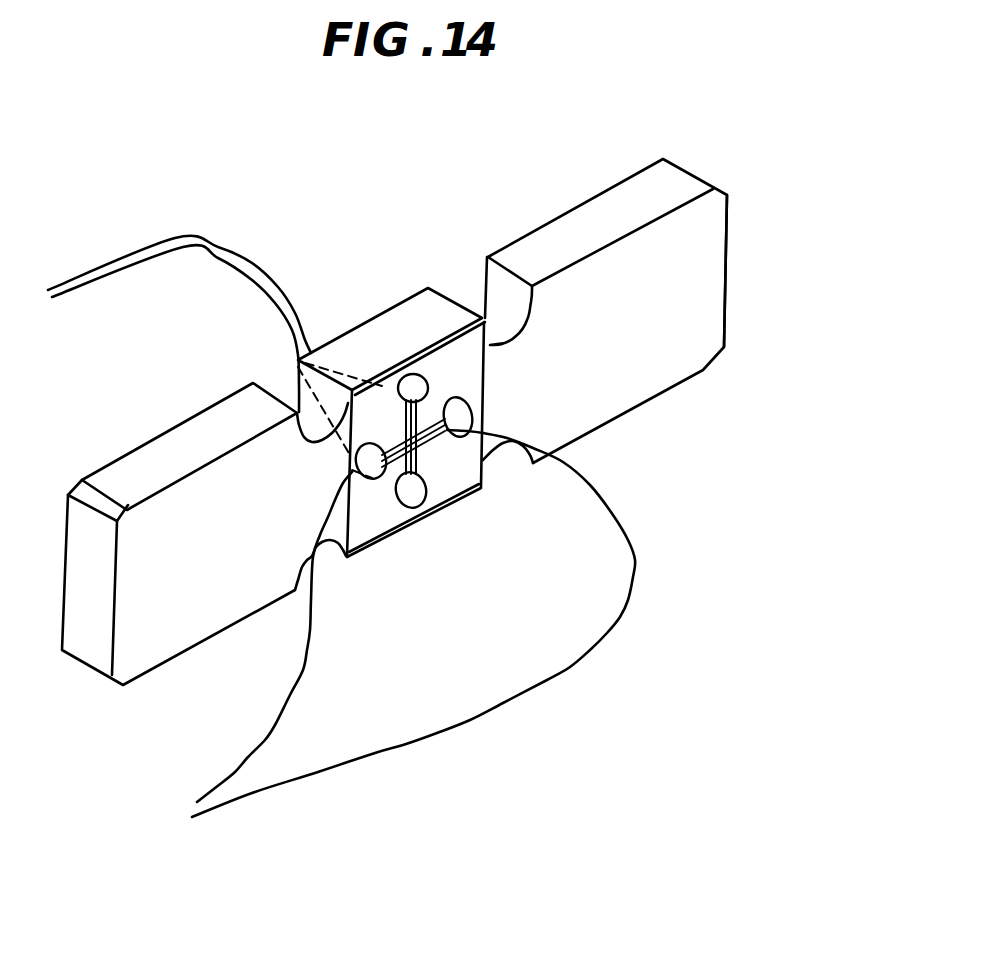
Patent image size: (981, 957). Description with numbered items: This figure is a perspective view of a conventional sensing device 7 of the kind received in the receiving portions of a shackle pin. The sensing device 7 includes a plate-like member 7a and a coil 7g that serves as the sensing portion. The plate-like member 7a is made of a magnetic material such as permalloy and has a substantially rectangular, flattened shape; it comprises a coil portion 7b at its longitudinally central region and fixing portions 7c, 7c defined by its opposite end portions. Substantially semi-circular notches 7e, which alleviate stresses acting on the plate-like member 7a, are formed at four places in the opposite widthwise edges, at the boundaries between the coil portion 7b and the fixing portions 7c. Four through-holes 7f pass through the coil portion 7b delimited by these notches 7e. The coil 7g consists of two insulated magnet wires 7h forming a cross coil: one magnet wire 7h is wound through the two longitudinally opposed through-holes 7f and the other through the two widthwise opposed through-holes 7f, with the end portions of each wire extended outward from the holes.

The sensing device 7 is at (740, 304).
The plate-like member 7a is at (728, 228).
The coil portion 7b is at (358, 343).
The fixing portions 7c is at (596, 213).
The notches 7e is at (503, 288).
The through-holes 7f is at (465, 397).
The coil 7g is at (472, 413).
The magnet wires 7h is at (445, 448).